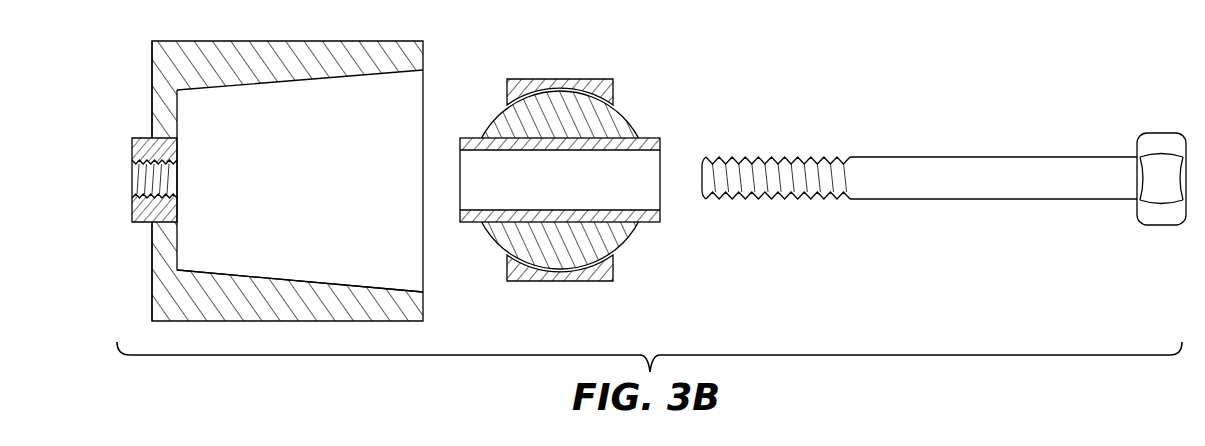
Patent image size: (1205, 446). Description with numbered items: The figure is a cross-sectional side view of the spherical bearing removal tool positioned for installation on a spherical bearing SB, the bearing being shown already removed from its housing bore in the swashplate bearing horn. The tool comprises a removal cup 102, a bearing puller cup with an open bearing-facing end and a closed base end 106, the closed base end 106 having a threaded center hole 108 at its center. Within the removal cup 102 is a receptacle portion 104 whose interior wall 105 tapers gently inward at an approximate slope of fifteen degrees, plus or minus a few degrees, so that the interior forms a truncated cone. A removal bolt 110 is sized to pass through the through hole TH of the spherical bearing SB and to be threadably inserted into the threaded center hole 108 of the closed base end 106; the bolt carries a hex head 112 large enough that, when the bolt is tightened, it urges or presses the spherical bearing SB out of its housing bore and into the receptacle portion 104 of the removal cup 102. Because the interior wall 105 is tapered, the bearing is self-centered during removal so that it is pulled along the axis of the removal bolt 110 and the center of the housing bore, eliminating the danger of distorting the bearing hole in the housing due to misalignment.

The removal cup 102 is at (298, 41).
The receptacle portion 104 is at (392, 116).
The interior wall 105 is at (358, 285).
The closed base end 106 is at (152, 97).
The threaded center hole 108 is at (132, 208).
The spherical bearing SB is at (546, 92).
The through hole TH is at (655, 170).
The removal bolt 110 is at (957, 157).
The screw head 112 is at (1160, 133).